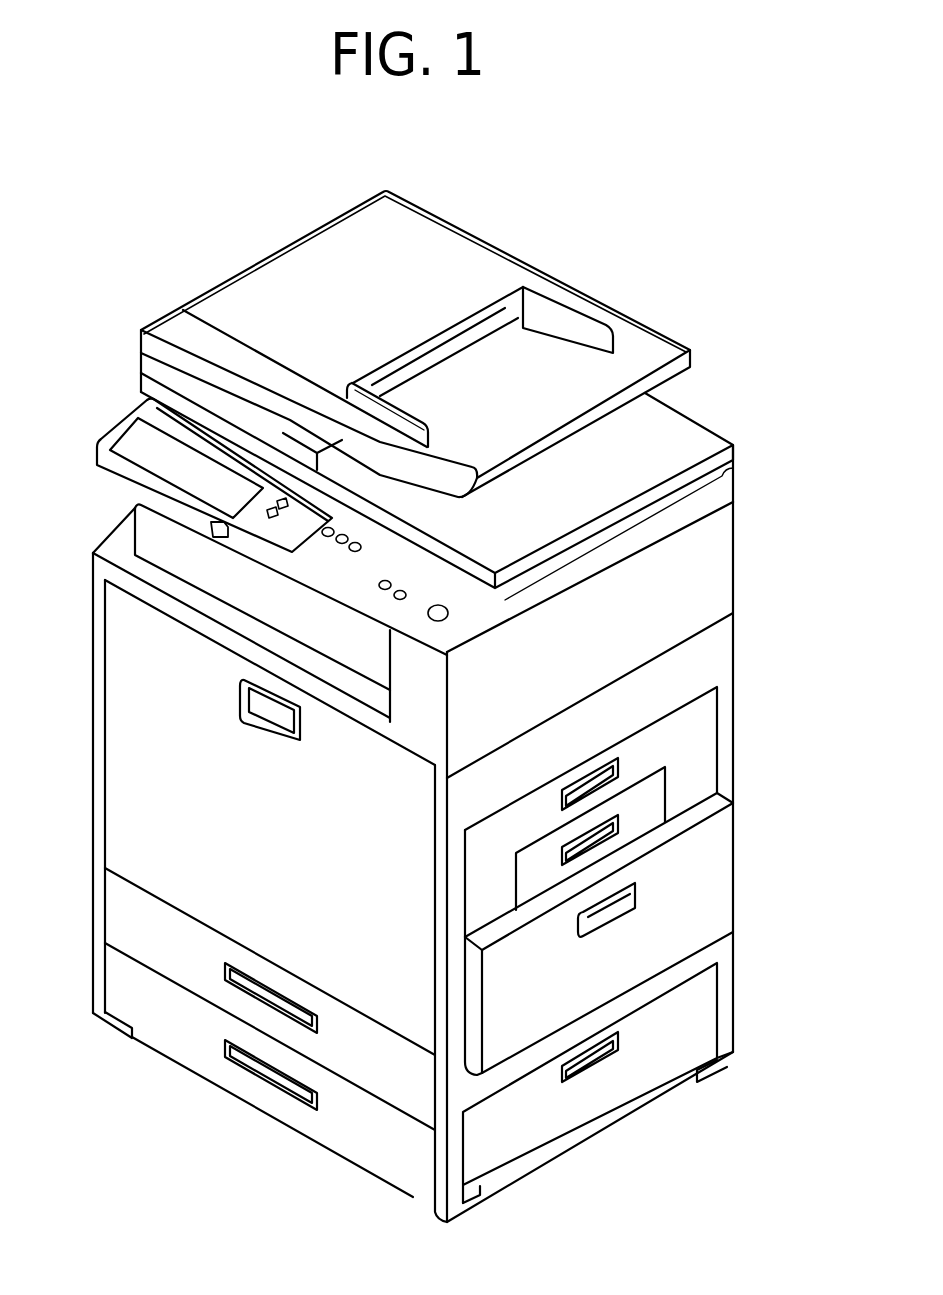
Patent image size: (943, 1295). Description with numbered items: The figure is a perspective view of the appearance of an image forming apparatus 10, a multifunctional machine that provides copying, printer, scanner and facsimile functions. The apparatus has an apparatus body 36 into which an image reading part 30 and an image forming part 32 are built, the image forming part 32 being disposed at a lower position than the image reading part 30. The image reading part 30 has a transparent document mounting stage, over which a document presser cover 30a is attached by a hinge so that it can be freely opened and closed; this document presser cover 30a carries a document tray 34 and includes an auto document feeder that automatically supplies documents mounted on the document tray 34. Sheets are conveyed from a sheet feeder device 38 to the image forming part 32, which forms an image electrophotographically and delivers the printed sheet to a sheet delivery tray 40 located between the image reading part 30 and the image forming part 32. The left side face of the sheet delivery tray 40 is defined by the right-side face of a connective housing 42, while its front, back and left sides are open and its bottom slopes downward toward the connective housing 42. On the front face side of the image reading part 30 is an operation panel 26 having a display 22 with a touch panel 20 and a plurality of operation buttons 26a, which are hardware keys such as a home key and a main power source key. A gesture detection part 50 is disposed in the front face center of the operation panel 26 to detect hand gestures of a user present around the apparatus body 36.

The image forming apparatus 10 is at (246, 170).
The touch panel 20 is at (135, 438).
The display 22 is at (214, 476).
The operation panel 26 is at (330, 566).
The operation buttons 26a is at (430, 573).
The image reading part 30 is at (677, 517).
The document presser cover 30a is at (690, 432).
The image forming part 32 is at (662, 698).
The document tray 34 is at (537, 345).
The apparatus body 36 is at (733, 565).
The sheet feeder device 38 is at (143, 937).
The sheet delivery tray 40 is at (207, 540).
The connective housing 42 is at (423, 713).
The gesture detection part 50 is at (218, 528).